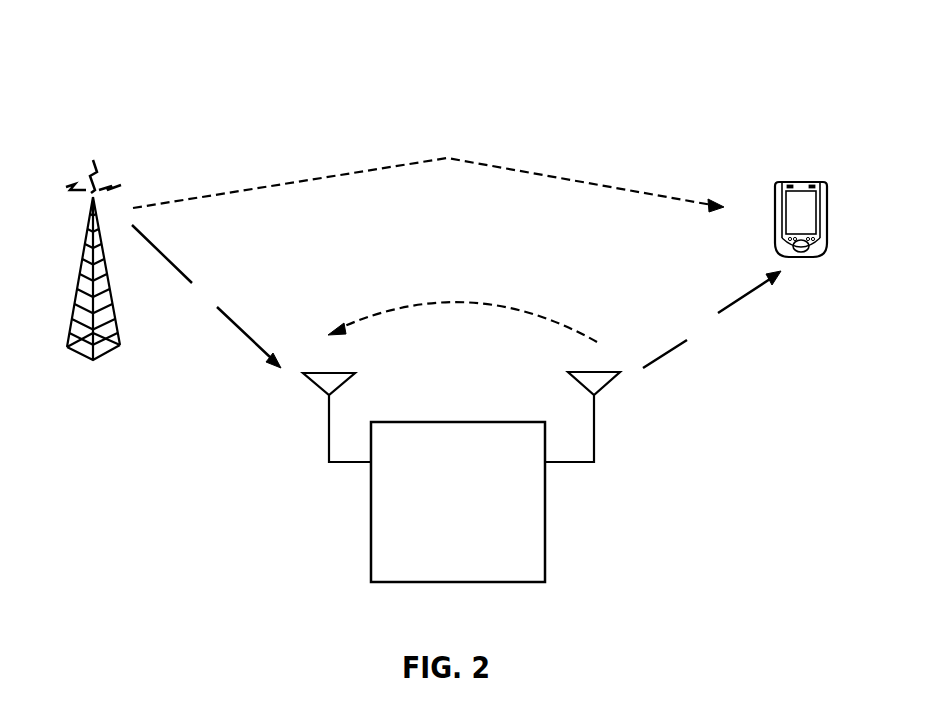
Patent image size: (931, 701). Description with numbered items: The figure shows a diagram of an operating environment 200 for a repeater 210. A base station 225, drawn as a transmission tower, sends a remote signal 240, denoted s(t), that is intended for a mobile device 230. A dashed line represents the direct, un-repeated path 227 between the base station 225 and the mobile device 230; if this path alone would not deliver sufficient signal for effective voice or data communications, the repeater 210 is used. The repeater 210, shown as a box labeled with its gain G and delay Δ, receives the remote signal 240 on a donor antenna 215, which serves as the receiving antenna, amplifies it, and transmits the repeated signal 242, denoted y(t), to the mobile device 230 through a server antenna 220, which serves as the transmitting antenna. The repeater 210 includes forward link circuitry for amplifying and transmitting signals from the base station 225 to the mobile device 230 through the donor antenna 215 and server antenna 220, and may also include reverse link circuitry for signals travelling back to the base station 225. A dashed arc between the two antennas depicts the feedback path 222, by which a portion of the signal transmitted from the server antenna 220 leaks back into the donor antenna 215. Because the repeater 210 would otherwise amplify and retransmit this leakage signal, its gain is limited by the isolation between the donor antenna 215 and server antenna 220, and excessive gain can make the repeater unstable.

The operating environment 200 is at (711, 94).
The repeater 210 is at (478, 582).
The donor antenna 215 is at (343, 377).
The server antenna 220 is at (577, 382).
The feedback path 222 is at (490, 302).
The base station 225 is at (105, 358).
The path 227 is at (553, 177).
The mobile device 230 is at (793, 183).
The remote signal 240 is at (170, 258).
The repeated signal 242 is at (748, 292).